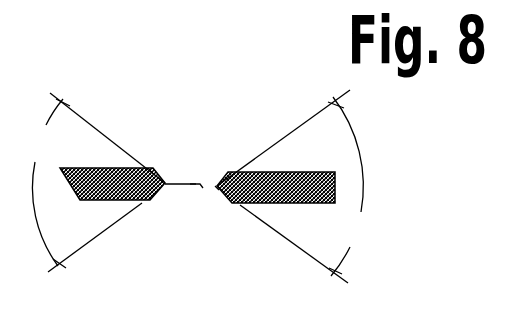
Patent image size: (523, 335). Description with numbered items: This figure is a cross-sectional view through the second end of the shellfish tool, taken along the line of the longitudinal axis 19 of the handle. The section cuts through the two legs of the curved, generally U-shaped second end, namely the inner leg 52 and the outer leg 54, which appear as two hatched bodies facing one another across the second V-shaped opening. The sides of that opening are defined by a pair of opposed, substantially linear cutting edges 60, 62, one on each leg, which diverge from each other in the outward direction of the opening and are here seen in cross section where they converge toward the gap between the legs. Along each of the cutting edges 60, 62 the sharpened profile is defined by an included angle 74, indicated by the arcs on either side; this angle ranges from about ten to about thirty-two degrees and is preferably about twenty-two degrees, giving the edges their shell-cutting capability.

The inner leg 52 is at (100, 168).
The outer leg 54 is at (287, 204).
The cutting edge 62 is at (170, 183).
The longitudinal axis 19 is at (193, 184).
The cutting edge 60 is at (215, 186).
The included angle 74 is at (200, 186).